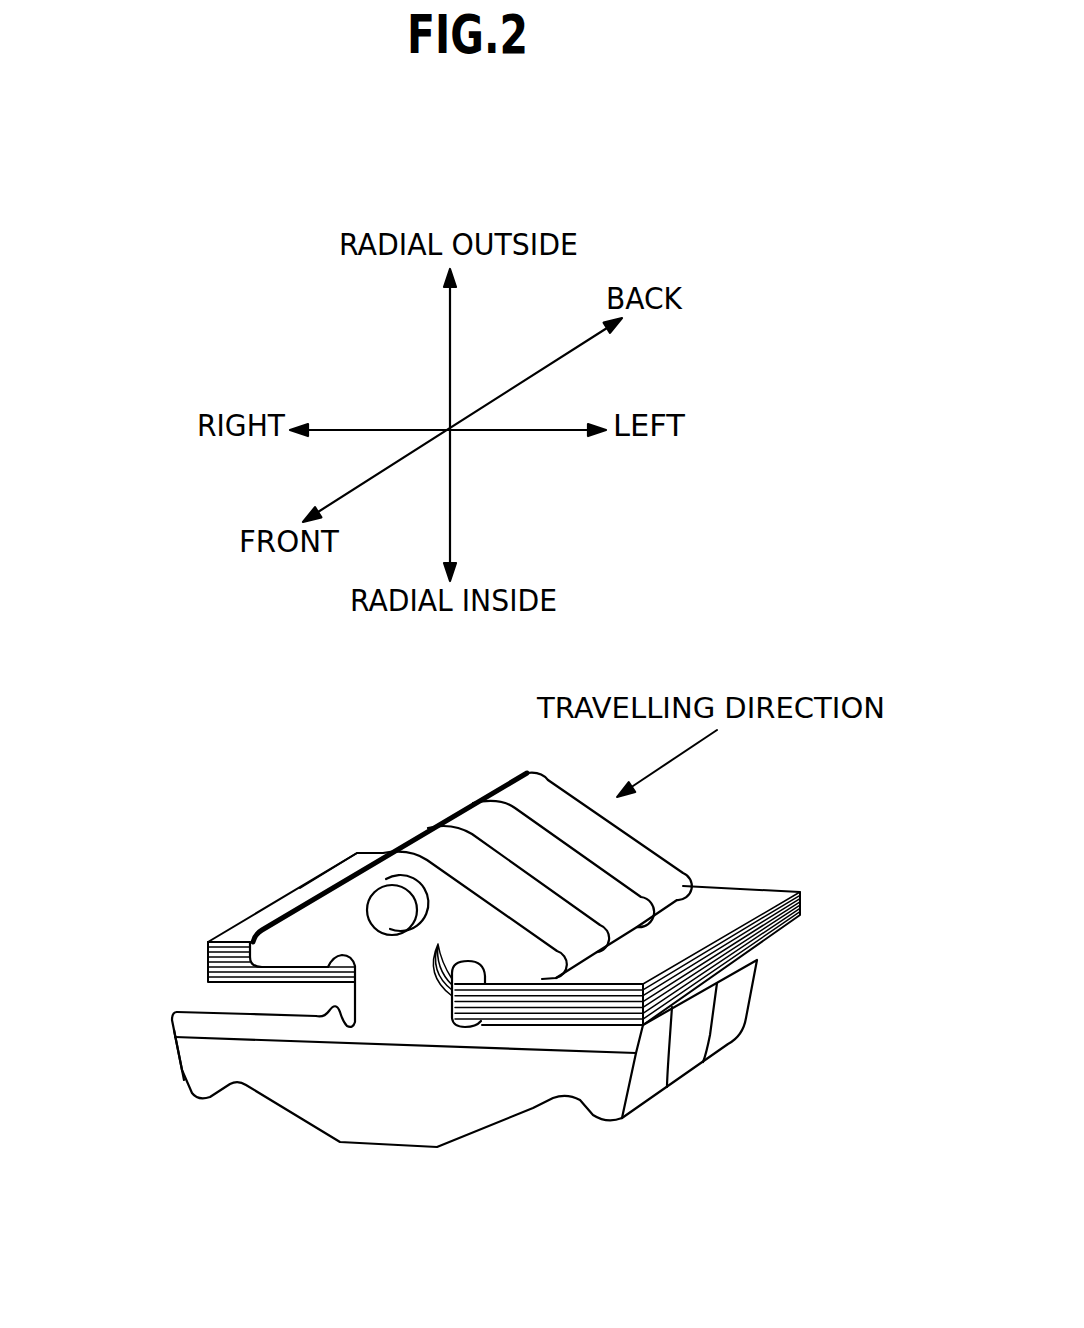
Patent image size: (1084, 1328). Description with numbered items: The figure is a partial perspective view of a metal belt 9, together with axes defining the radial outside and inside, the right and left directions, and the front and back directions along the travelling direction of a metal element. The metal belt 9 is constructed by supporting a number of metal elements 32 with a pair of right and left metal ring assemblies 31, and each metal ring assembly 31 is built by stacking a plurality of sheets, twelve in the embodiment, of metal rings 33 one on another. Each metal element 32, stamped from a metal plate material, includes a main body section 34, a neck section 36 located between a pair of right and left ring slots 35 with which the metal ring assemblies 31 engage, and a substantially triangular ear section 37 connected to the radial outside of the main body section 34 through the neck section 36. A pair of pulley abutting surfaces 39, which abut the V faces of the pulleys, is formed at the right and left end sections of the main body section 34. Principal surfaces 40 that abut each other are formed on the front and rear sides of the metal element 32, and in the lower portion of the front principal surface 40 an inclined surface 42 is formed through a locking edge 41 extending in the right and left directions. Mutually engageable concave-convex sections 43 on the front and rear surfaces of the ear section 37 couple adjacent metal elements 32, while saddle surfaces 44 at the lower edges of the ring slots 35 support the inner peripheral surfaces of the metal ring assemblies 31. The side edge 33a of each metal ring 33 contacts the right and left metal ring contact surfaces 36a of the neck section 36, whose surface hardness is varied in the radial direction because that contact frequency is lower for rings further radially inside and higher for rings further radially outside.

The metal belt 9 is at (447, 746).
The metal ring assembly 31 is at (738, 902).
The metal element 32 is at (514, 1152).
The metal ring 33 is at (208, 961).
The side edge 33a is at (452, 952).
The main body section 34 is at (203, 1063).
The ring slot 35 is at (335, 1010).
The neck section 36 is at (424, 1042).
The metal ring contact surface 36a is at (458, 1022).
The ear section 37 is at (332, 915).
The pulley abutting surface 39 is at (645, 1075).
The principal surface 40 is at (418, 1013).
The locking edge 41 is at (308, 1046).
The inclined surface 42 is at (423, 1108).
The concave-convex section 43 is at (387, 907).
The saddle surface 44 is at (258, 993).